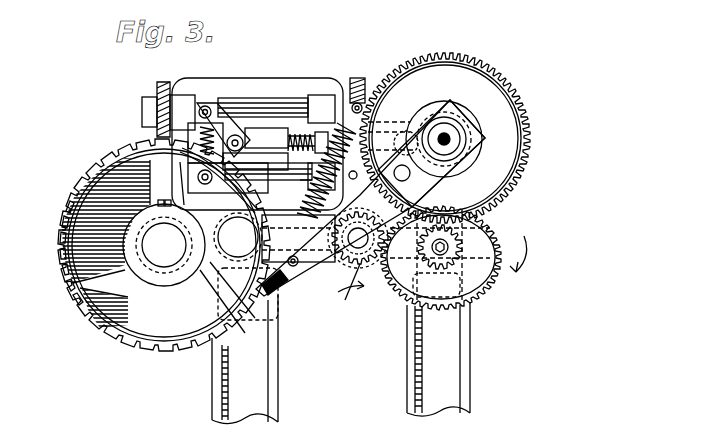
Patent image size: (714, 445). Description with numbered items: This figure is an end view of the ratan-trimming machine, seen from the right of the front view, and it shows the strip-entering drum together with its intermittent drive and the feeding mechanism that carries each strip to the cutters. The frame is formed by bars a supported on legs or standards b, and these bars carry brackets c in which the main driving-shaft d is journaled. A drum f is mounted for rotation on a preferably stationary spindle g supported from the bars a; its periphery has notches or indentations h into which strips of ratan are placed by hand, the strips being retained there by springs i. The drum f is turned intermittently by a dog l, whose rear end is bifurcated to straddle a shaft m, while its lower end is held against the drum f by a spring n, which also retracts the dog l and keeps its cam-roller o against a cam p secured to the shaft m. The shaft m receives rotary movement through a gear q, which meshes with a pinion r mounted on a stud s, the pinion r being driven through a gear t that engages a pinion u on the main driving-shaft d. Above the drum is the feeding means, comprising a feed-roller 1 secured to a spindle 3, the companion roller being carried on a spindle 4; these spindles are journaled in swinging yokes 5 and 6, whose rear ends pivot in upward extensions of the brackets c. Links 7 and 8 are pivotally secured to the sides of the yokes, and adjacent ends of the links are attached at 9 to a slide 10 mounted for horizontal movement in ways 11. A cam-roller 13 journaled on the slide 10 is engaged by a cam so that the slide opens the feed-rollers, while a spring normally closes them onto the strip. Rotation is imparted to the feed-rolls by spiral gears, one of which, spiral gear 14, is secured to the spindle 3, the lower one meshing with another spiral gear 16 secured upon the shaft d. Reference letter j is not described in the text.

The feed-roller 1 is at (160, 95).
The spindle 3 is at (254, 100).
The spindle 4 is at (283, 182).
The swinging yoke 5 is at (216, 88).
The swinging yoke 6 is at (306, 185).
The link 7 is at (226, 108).
The link 8 is at (198, 179).
The attachment point of links 9 is at (244, 144).
The slide 10 is at (284, 128).
The ways 11 is at (306, 118).
The cam-roller 13 is at (192, 160).
The spiral gear 14 is at (357, 78).
The spiral gear 16 is at (358, 280).
The bar a is at (238, 237).
The standard b is at (278, 392).
The bracket c is at (298, 238).
The main driving-shaft d is at (352, 248).
The drum f is at (68, 257).
The spindle g is at (164, 245).
The notch h is at (63, 222).
The spring i is at (66, 276).
The pin j is at (76, 212).
The dog l is at (370, 198).
The shaft m is at (462, 150).
The spring n is at (295, 268).
The cam-roller o is at (398, 170).
The cam p is at (466, 128).
The gear q is at (524, 158).
The pinion r is at (495, 244).
The stud s is at (452, 249).
The gear t is at (490, 284).
The pinion u is at (358, 266).